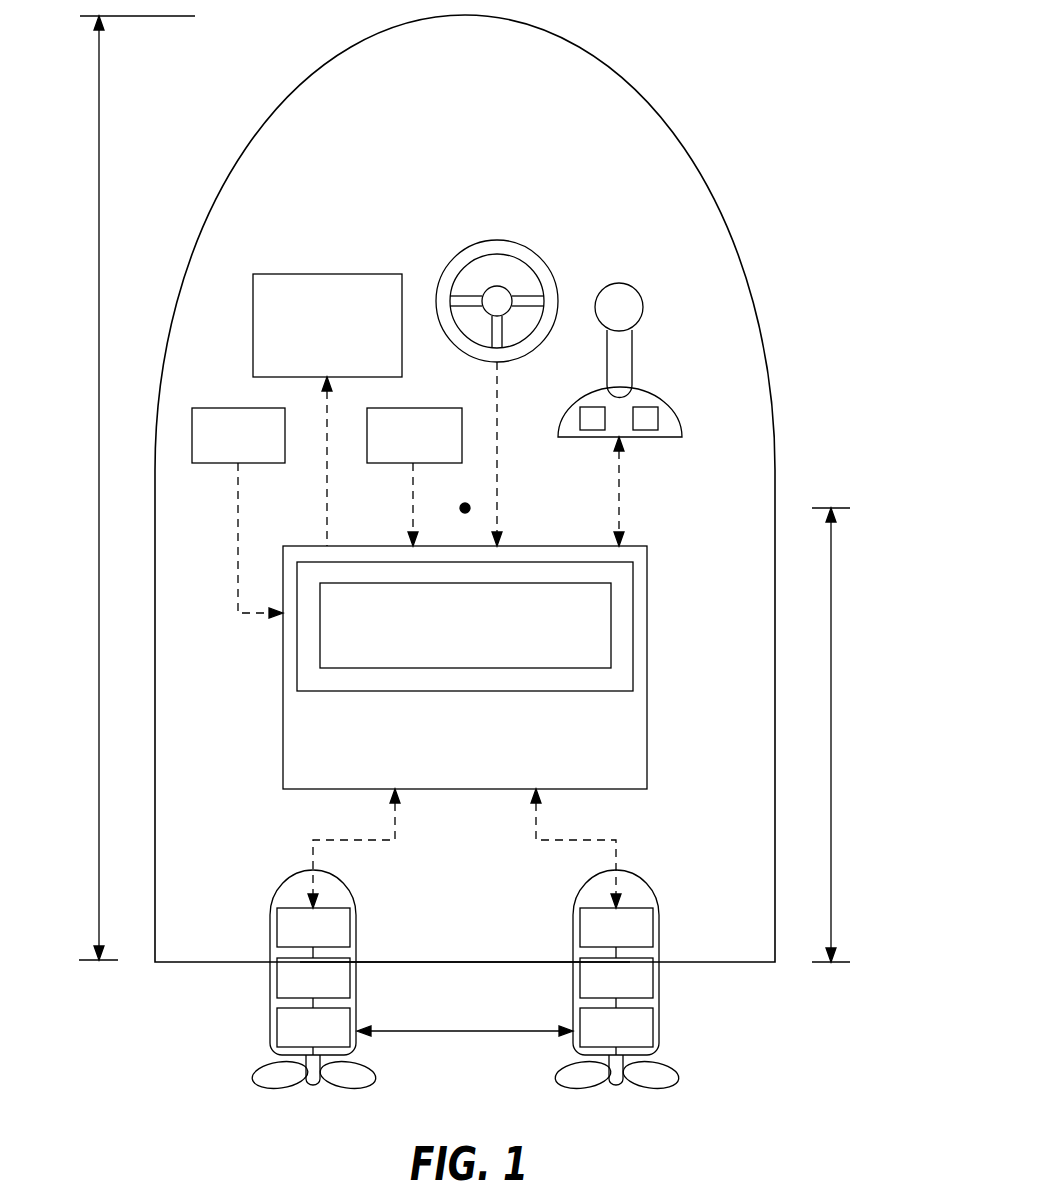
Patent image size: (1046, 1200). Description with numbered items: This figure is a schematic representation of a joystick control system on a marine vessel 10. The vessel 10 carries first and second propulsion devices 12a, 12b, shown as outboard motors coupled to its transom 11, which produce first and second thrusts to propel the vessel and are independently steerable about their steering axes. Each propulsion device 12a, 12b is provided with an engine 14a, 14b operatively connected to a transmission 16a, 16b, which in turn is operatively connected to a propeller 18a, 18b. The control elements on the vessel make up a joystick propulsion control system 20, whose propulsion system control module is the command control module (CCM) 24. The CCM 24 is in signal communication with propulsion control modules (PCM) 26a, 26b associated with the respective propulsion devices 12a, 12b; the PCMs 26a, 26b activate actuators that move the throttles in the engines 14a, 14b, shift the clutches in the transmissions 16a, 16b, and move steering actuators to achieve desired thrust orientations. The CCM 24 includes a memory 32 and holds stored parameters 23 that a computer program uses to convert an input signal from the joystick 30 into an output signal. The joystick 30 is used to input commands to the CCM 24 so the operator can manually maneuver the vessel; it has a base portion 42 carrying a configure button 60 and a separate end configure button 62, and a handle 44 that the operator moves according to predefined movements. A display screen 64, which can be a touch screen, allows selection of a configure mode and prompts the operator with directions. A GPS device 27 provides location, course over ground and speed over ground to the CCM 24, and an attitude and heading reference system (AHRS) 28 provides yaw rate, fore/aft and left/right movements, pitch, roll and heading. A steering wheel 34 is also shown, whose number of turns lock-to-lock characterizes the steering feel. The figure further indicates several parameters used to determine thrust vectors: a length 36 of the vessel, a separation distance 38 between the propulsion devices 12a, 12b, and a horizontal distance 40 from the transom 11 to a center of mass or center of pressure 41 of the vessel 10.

The marine vessel 10 is at (712, 197).
The transom 11 is at (463, 963).
The first propulsion device 12a is at (276, 975).
The second propulsion device 12b is at (653, 976).
The engine 14a is at (277, 975).
The engine 14b is at (653, 975).
The transmission 16a is at (277, 1027).
The transmission 16b is at (653, 1027).
The propeller 18a is at (263, 1077).
The propeller 18b is at (667, 1077).
The joystick propulsion control system 20 is at (494, 727).
The stored parameters 23 is at (611, 607).
The command control module (CCM) 24 is at (478, 667).
The propulsion control module (PCM) 26a is at (277, 932).
The propulsion control module (PCM) 26b is at (657, 932).
The GPS device 27 is at (219, 463).
The attitude and heading reference system (AHRS) 28 is at (407, 408).
The joystick 30 is at (629, 389).
The memory 32 is at (507, 620).
The steering wheel 34 is at (493, 240).
The length of the marine vessel 36 is at (99, 505).
The separation distance 38 is at (457, 1033).
The horizontal distance 40 is at (831, 738).
The center of mass or center of pressure 41 is at (465, 504).
The base portion 42 is at (629, 422).
The handle 44 is at (636, 295).
The configure button 60 is at (580, 417).
The end configure button 62 is at (643, 433).
The display screen 64 is at (330, 274).